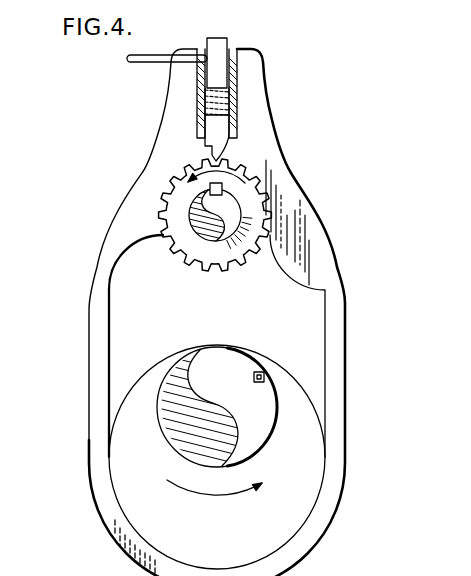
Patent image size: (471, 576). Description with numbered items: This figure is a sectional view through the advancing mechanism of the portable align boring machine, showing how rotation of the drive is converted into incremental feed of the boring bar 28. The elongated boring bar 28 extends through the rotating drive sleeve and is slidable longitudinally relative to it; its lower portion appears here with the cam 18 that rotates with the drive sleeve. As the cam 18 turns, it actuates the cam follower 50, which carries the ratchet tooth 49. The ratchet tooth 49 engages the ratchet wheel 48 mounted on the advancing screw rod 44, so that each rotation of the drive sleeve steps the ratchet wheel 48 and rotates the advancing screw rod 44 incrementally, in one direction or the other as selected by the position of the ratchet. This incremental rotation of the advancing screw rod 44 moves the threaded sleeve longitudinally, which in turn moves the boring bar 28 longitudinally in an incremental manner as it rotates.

The cam 18 is at (308, 473).
The boring bar 28 is at (163, 417).
The advancing screw rod 44 is at (197, 217).
The ratchet wheel 48 is at (167, 197).
The ratchet tooth 49 is at (212, 128).
The cam follower 50 is at (340, 302).